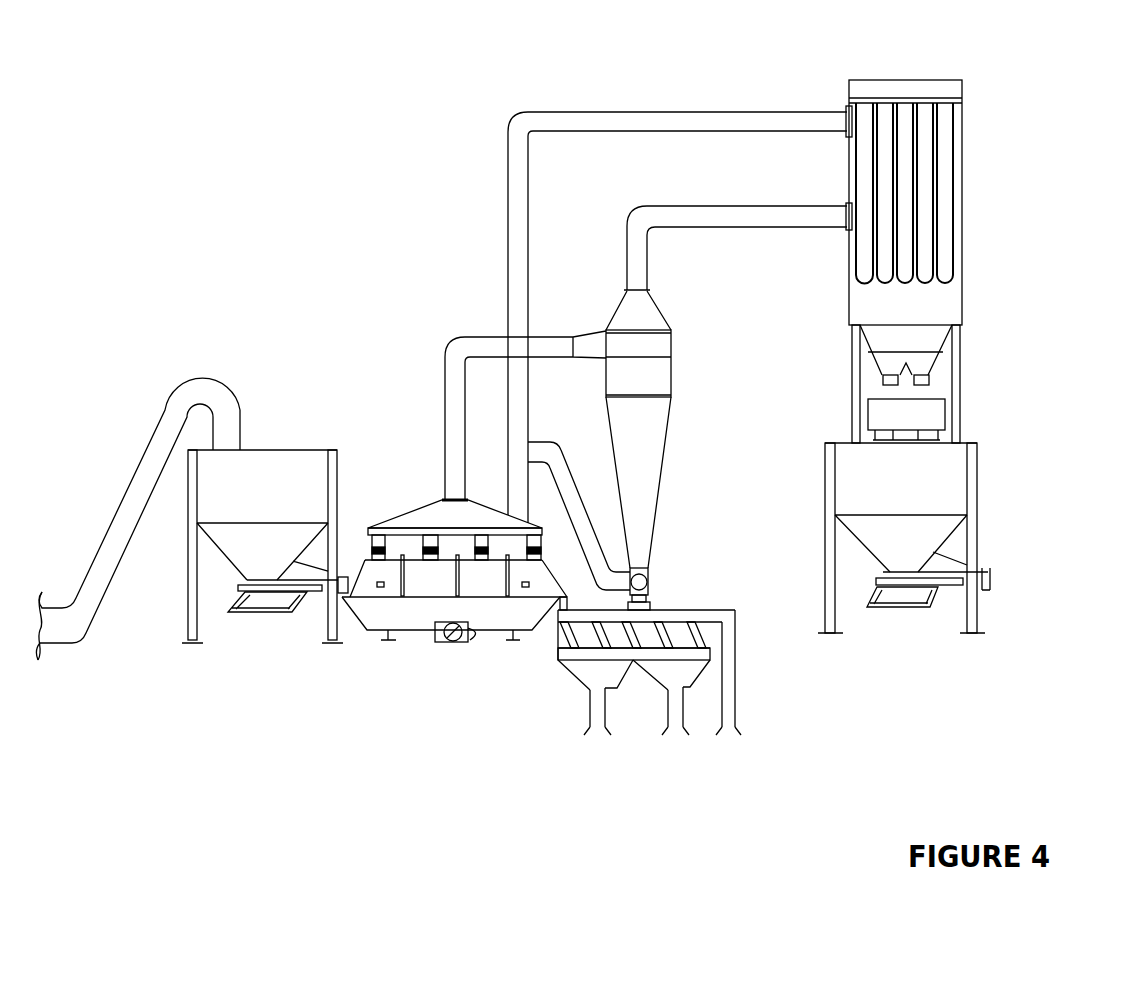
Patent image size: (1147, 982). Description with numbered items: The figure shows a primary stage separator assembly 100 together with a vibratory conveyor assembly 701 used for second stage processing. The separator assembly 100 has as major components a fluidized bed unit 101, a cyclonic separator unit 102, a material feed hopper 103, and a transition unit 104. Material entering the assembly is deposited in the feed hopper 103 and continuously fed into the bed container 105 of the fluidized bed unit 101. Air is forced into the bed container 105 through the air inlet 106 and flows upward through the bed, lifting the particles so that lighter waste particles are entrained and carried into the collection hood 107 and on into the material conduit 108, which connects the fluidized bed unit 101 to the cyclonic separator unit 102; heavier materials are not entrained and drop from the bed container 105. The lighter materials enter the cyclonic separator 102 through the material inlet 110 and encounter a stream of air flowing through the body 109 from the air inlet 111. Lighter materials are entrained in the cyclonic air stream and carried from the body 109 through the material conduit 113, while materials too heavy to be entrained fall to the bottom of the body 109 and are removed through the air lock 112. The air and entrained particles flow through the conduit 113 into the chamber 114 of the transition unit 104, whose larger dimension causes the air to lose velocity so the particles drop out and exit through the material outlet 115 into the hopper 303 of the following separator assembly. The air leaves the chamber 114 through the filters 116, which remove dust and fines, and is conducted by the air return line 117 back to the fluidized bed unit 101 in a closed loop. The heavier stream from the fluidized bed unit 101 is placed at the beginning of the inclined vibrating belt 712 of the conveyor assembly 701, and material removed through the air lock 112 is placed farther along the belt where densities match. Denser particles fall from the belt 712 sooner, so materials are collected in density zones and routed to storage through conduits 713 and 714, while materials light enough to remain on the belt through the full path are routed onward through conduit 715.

The separator assembly 100 is at (483, 315).
The fluidized bed unit 101 is at (425, 497).
The cyclonic separator unit 102 is at (685, 387).
The material feed hopper 103 is at (297, 417).
The transition unit 104 is at (977, 230).
The bed container 105 is at (383, 618).
The air inlet 106 is at (453, 641).
The collection hood 107 is at (405, 517).
The material conduit 108 is at (535, 347).
The body 109 is at (647, 443).
The material inlet 110 is at (590, 343).
The air inlet 111 is at (620, 580).
The air lock 112 is at (640, 582).
The material conduit 113 is at (740, 215).
The chamber 114 is at (935, 310).
The material outlet 115 is at (920, 365).
The filters 116 is at (938, 172).
The air return line 117 is at (662, 120).
The hopper 303 is at (1005, 517).
The conveyor assembly 701 is at (697, 677).
The inclined vibrating belt 712 is at (683, 630).
The conduit 713 is at (591, 718).
The conduit 714 is at (668, 718).
The conduit 715 is at (730, 713).